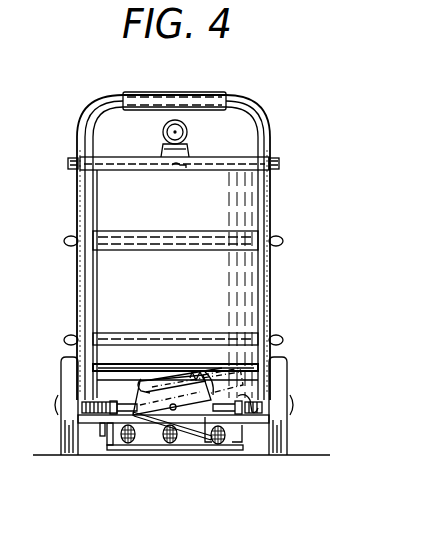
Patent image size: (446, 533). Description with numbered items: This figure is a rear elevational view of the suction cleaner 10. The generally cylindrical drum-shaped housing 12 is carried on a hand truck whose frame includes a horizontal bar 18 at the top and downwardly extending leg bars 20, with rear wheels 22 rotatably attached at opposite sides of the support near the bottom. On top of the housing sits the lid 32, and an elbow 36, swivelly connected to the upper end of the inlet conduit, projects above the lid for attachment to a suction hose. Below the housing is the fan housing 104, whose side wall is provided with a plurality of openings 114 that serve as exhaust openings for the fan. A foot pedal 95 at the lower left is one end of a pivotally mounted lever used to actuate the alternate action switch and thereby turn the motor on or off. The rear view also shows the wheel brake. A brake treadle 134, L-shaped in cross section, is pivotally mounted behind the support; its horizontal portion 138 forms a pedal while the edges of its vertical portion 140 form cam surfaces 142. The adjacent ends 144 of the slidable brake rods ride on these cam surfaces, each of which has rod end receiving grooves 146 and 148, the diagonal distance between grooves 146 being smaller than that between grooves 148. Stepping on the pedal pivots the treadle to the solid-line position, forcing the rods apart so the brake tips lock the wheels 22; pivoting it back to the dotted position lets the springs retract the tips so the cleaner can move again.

The suction cleaner 10 is at (290, 96).
The housing 12 is at (179, 213).
The horizontal bar 18 is at (205, 94).
The leg bars 20 is at (84, 208).
The rear wheels 22 is at (70, 370).
The lid 32 is at (116, 157).
The elbow 36 is at (188, 131).
The foot pedal 95 is at (100, 432).
The housing 104 is at (148, 454).
The openings 114 is at (123, 434).
The brake treadle 134 is at (153, 378).
The horizontal portion 138 is at (191, 432).
The vertical portion 140 is at (153, 378).
The cam surfaces 142 is at (140, 392).
The adjacent ends 144 is at (210, 442).
The rod end receiving grooves 146 is at (143, 385).
The rod end receiving grooves 148 is at (209, 395).